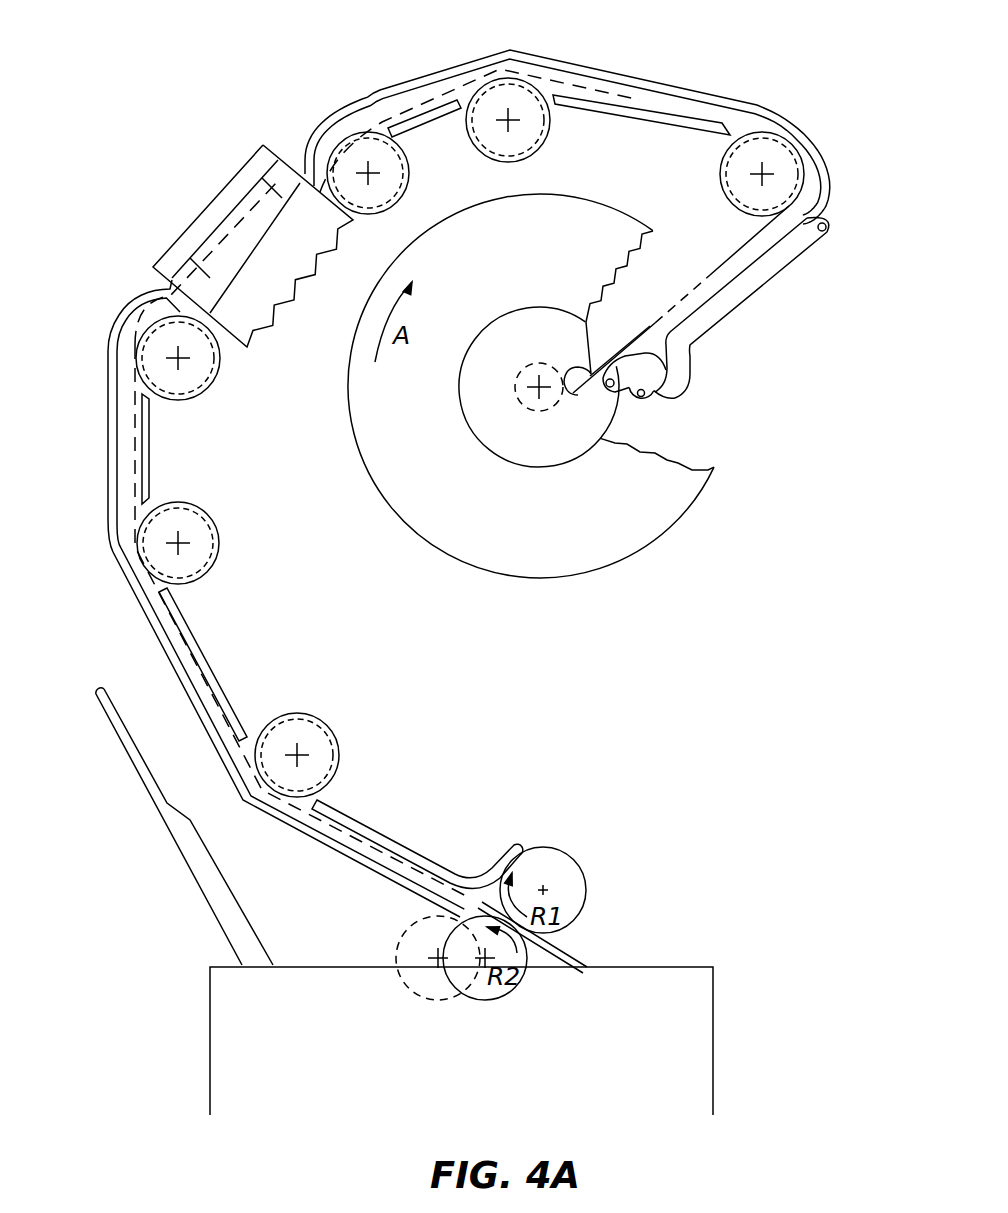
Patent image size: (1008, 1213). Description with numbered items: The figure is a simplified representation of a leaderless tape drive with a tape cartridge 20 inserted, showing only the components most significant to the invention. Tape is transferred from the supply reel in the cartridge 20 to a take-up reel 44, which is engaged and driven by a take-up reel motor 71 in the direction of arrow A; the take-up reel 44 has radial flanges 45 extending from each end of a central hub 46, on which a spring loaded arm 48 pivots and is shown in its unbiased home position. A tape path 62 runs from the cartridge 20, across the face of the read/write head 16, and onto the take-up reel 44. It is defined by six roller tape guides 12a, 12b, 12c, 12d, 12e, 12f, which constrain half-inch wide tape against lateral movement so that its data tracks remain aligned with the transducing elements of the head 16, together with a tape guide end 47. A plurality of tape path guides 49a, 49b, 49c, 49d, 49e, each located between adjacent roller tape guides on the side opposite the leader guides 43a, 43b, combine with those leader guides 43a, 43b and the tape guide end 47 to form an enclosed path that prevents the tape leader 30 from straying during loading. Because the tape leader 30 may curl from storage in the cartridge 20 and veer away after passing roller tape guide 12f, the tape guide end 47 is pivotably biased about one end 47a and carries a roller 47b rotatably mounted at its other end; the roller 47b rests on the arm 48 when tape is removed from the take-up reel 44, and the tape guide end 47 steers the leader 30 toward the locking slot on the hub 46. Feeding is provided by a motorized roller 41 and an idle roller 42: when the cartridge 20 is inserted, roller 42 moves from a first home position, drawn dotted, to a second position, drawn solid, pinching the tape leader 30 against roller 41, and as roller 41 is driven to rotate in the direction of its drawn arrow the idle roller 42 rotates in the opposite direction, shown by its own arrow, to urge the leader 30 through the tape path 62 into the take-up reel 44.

The roller tape guide 12a is at (340, 746).
The roller tape guide 12b is at (222, 530).
The roller tape guide 12c is at (220, 372).
The roller tape guide 12d is at (350, 158).
The roller tape guide 12e is at (513, 78).
The roller tape guide 12f is at (725, 188).
The read/write head 16 is at (212, 195).
The tape cartridge 20 is at (272, 1016).
The tape leader 30 is at (737, 250).
The motorized roller 41 is at (586, 878).
The idle roller 42 is at (497, 992).
The tape guide 43a is at (164, 649).
The tape guide 43b is at (662, 76).
The take-up reel 44 is at (492, 590).
The radial flange 45 is at (432, 461).
The central hub 46 is at (545, 350).
The tape guide end 47 is at (745, 300).
The end 47a is at (830, 227).
The roller 47b is at (652, 402).
The spring loaded arm 48 is at (690, 388).
The tape path guide 49a is at (413, 838).
The tape path guide 49b is at (212, 654).
The tape path guide 49c is at (151, 466).
The tape path guide 49d is at (427, 129).
The tape path guide 49e is at (636, 126).
The tape path 62 is at (123, 489).
The take-up reel motor 71 is at (550, 415).